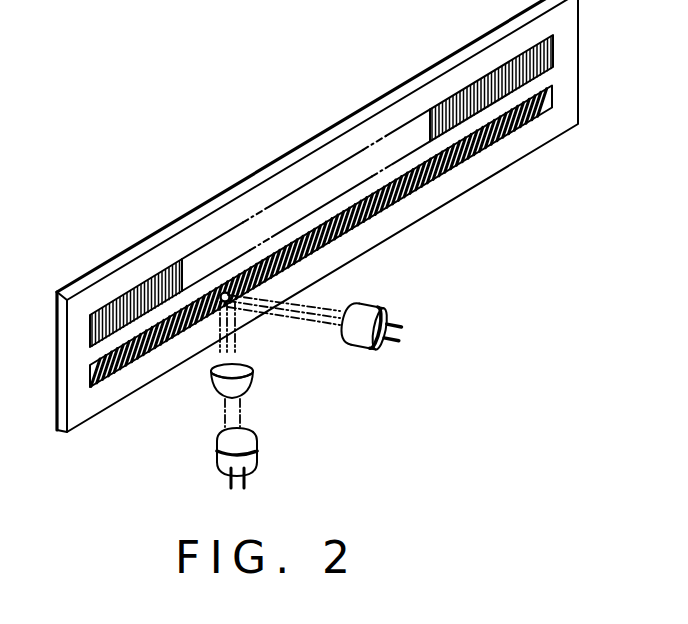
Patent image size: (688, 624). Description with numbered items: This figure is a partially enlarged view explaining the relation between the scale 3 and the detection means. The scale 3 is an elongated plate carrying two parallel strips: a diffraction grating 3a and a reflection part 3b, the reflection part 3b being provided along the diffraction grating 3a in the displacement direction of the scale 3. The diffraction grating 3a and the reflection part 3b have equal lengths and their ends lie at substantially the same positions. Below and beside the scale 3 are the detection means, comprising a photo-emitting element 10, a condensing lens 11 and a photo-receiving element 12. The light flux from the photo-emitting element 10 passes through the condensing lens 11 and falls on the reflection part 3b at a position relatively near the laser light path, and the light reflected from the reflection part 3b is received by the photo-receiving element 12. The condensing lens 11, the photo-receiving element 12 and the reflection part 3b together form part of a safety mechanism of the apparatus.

The scale 3 is at (177, 217).
The diffraction grating 3a is at (553, 50).
The reflection part 3b is at (480, 143).
The photo-emitting element 10 is at (258, 453).
The condensing lens 11 is at (254, 381).
The photo-receiving element 12 is at (357, 348).